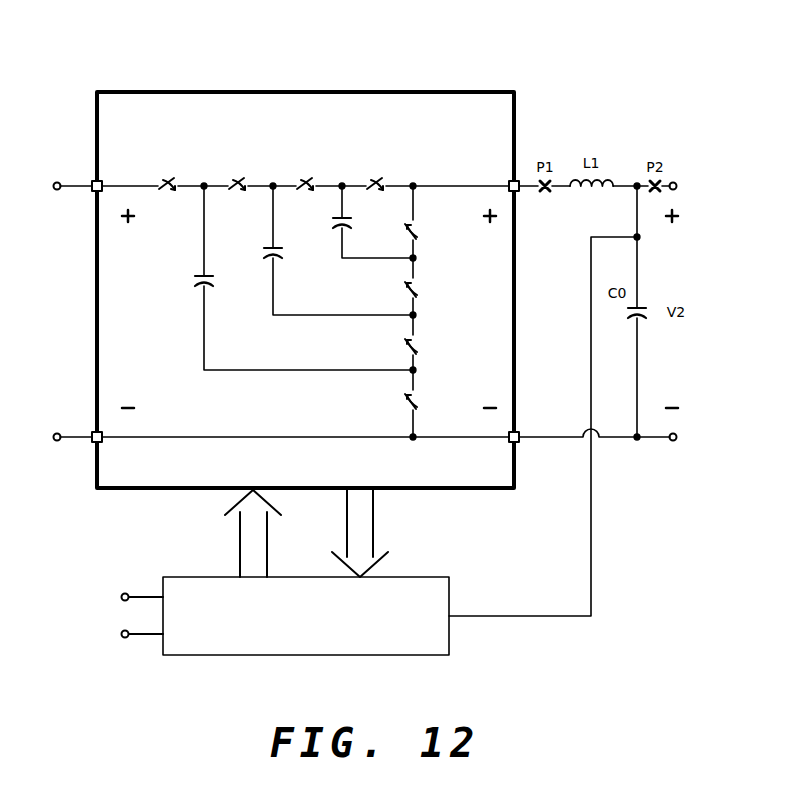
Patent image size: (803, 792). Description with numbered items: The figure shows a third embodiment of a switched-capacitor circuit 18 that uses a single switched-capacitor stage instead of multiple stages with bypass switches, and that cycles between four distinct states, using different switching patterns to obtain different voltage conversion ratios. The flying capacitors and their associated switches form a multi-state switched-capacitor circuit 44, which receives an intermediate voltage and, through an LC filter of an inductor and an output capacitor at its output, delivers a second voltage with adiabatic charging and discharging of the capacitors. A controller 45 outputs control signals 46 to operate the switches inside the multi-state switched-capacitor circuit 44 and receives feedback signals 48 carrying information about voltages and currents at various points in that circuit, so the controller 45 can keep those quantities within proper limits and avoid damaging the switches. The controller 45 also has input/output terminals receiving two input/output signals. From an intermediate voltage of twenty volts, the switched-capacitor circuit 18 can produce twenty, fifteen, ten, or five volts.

The switched-capacitor circuit 18 is at (588, 107).
The multi-state switched-capacitor circuit 44 is at (477, 126).
The controller 45 is at (420, 641).
The control signals 46 is at (228, 540).
The feedback signals 48 is at (385, 540).